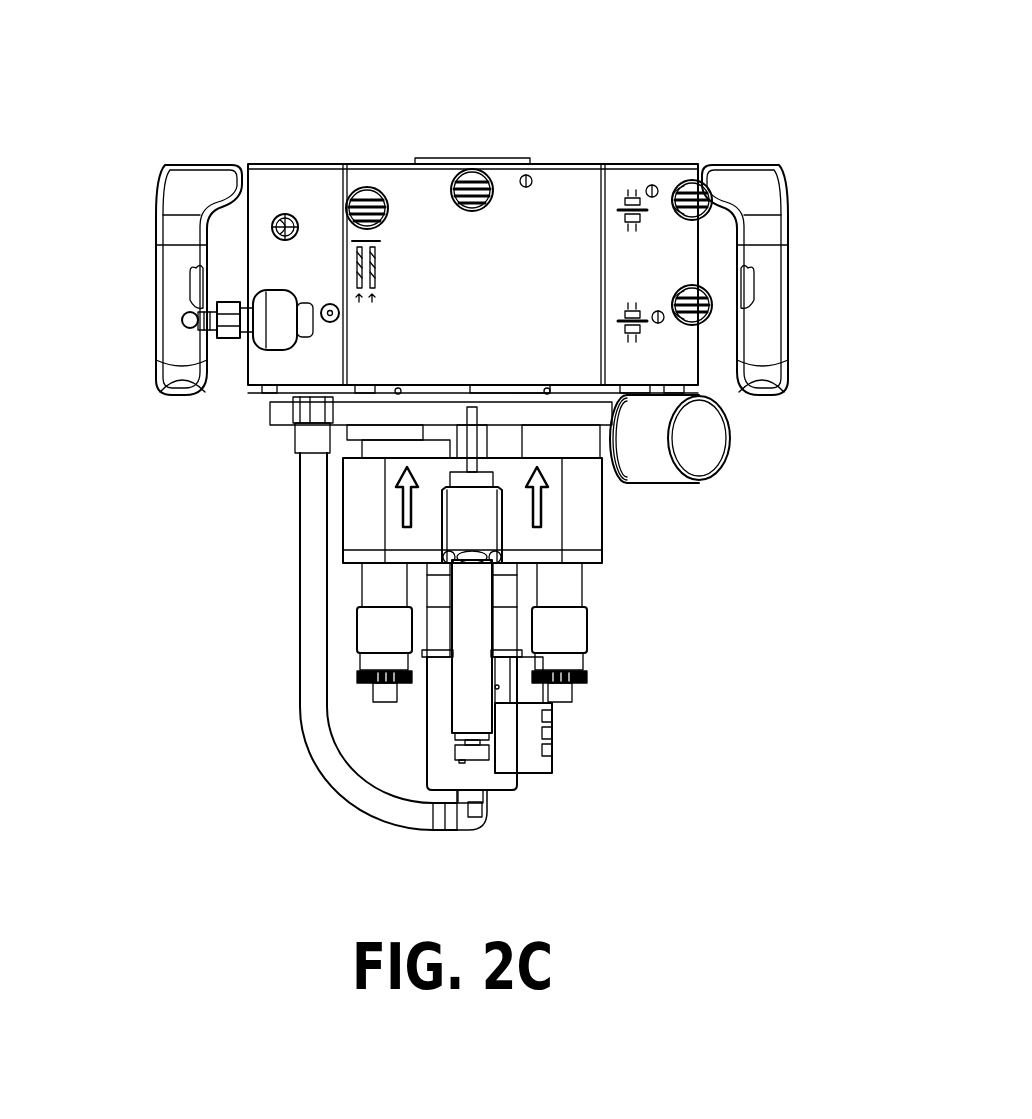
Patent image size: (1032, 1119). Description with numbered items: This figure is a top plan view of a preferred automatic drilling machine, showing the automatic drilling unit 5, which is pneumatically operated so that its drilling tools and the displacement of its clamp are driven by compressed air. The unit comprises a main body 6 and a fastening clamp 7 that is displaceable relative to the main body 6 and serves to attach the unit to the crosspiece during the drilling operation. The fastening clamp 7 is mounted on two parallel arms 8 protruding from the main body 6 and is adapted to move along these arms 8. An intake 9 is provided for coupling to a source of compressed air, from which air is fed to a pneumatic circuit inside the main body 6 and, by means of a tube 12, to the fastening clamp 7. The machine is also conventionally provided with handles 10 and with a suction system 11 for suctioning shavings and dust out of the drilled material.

The automatic drilling unit 5 is at (690, 128).
The main body 6 is at (554, 210).
The fastening clamp 7 is at (586, 531).
The parallel arms 8 is at (376, 583).
The intake 9 is at (218, 318).
The handles 10 is at (178, 218).
The suction system 11 is at (709, 452).
The tube 12 is at (331, 775).